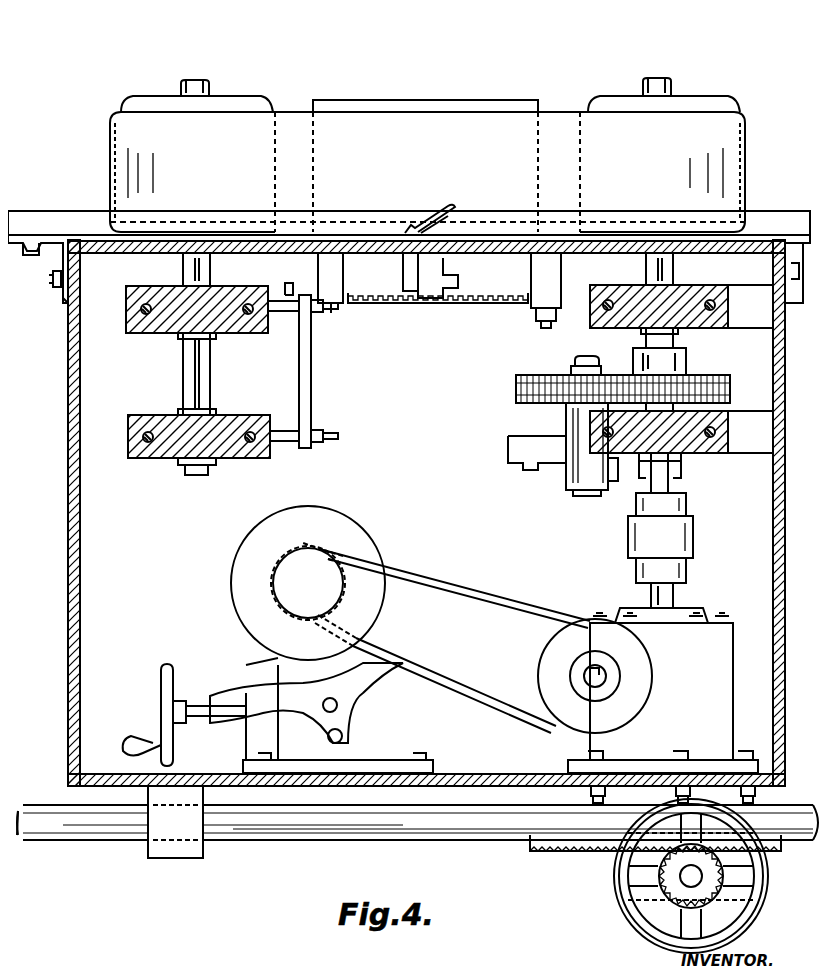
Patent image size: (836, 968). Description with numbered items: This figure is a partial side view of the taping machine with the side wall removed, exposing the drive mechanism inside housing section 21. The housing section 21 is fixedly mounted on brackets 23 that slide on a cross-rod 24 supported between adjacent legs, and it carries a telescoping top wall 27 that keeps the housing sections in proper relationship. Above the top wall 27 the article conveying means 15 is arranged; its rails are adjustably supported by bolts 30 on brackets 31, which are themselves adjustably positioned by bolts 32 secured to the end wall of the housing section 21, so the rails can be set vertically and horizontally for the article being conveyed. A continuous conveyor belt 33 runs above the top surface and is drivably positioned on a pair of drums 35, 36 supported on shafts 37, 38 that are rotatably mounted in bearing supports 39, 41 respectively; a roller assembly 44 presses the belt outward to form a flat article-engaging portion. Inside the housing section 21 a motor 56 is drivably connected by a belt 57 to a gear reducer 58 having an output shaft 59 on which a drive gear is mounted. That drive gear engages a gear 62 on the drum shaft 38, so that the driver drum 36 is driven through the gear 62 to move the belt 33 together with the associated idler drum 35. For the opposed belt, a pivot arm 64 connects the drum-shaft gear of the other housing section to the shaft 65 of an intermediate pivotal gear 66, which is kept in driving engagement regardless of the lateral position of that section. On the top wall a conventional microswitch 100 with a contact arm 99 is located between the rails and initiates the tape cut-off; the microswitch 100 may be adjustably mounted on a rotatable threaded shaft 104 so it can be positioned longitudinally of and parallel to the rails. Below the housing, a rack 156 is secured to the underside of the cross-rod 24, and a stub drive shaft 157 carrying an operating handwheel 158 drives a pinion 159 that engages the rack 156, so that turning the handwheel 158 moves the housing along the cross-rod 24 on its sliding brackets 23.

The article conveying means 15 is at (592, 72).
The housing section 21 is at (66, 668).
The brackets 23 is at (182, 847).
The cross-rod 24 is at (407, 826).
The top wall 27 is at (286, 250).
The bolts 30 is at (30, 250).
The brackets 31 is at (60, 296).
The bolts 32 is at (50, 278).
The conveyor belt 33 is at (107, 135).
The driving drum 35 is at (272, 95).
The driving drum 36 is at (718, 97).
The shaft 37 is at (206, 77).
The shaft 38 is at (668, 77).
The bearing supports 39 is at (148, 416).
The bearing supports 41 is at (598, 314).
The roller assembly 44 is at (481, 100).
The motor 56 is at (350, 538).
The belt 57 is at (478, 590).
The gear reducer 58 is at (717, 652).
The output shaft 59 is at (668, 598).
The gear 62 is at (708, 372).
The pivot arm 64 is at (563, 415).
The shaft 65 is at (568, 358).
The intermediate pivotal gear 66 is at (513, 374).
The contact arm 99 is at (440, 203).
The microswitch 100 is at (464, 272).
The threaded shaft 104 is at (477, 300).
The rack 156 is at (555, 849).
The stub drive shaft 157 is at (699, 873).
The handwheel 158 is at (614, 880).
The pinion 159 is at (660, 893).